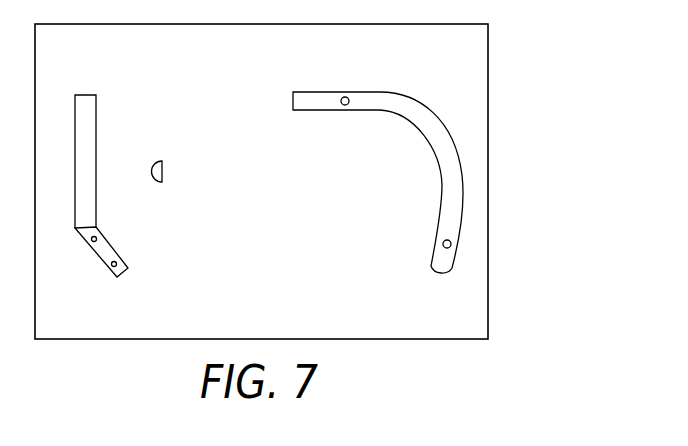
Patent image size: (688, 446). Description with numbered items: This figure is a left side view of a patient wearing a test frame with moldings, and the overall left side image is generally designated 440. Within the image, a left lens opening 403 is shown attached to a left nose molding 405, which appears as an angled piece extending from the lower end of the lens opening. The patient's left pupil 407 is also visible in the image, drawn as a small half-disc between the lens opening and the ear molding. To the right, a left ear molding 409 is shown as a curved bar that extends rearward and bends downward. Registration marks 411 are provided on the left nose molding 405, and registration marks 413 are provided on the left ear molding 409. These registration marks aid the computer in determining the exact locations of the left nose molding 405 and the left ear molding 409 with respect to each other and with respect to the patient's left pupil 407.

The left lens opening 403 is at (86, 113).
The left nose molding 405 is at (108, 251).
The left pupil 407 is at (152, 163).
The left ear molding 409 is at (420, 117).
The registration marks 411 is at (93, 248).
The registration marks 413 is at (345, 105).
The left side image 440 is at (534, 123).